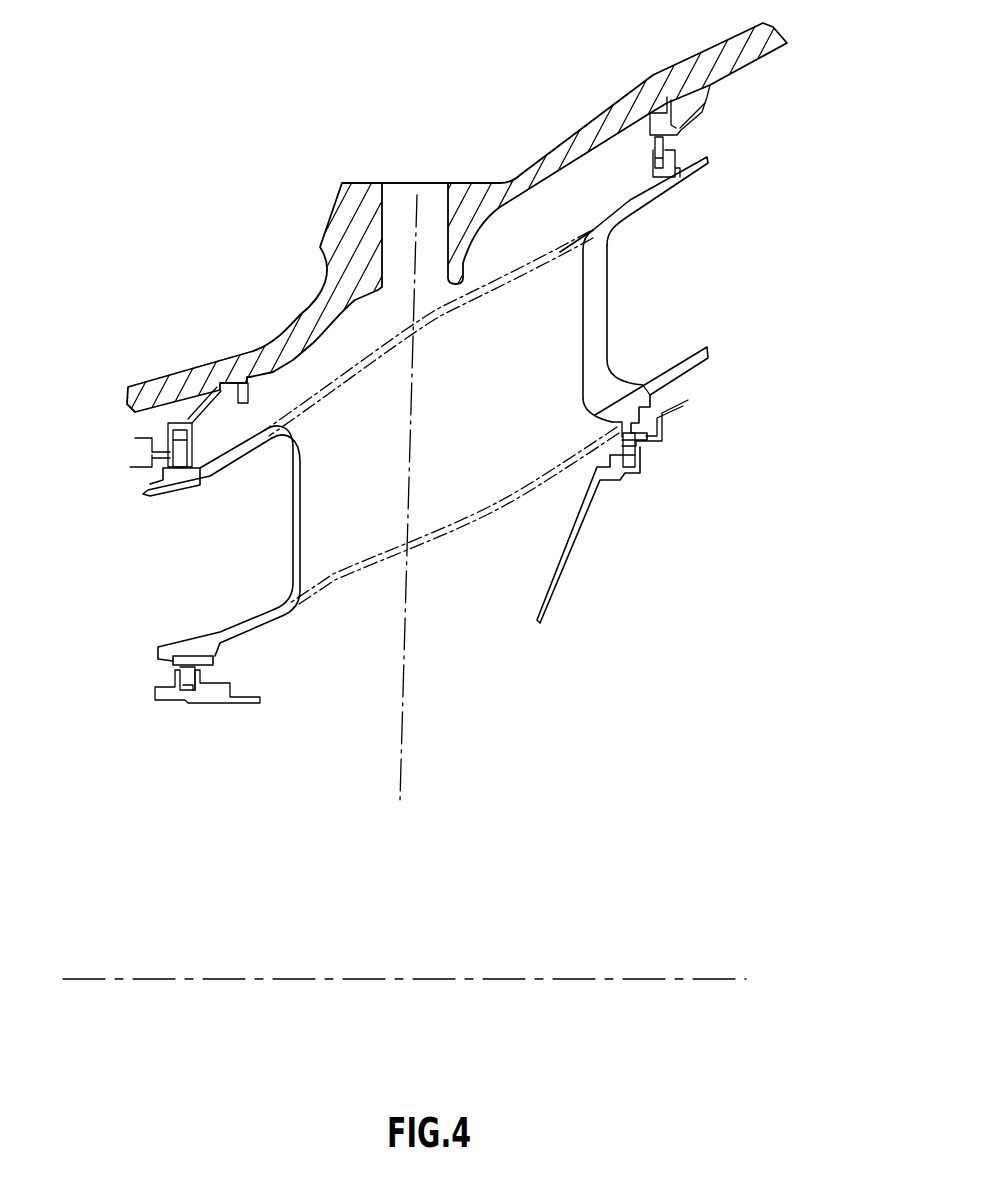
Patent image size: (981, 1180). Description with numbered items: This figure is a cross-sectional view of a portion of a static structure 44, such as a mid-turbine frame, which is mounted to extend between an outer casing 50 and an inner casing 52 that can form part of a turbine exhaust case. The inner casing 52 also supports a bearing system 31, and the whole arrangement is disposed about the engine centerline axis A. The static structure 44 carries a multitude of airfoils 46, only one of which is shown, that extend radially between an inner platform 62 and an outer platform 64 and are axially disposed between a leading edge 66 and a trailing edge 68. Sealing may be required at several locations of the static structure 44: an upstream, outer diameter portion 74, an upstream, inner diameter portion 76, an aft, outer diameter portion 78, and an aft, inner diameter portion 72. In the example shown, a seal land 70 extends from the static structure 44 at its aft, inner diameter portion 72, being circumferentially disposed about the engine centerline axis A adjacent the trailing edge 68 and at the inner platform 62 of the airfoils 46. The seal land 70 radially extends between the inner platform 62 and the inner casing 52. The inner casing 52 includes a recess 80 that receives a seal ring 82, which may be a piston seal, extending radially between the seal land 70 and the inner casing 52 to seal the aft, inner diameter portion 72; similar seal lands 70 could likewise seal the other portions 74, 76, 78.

The outer casing 50 is at (553, 147).
The aft, outer diameter portion 78 is at (722, 152).
The trailing edge 68 is at (808, 170).
The static structure 44 is at (733, 268).
The outer platform 64 is at (633, 200).
The airfoils 46 is at (491, 357).
The inner platform 62 is at (706, 356).
The upstream, outer diameter portion 74 is at (118, 511).
The leading edge 66 is at (39, 593).
The upstream, inner diameter portion 76 is at (143, 652).
The aft, inner diameter portion 72 is at (642, 385).
The seal land 70 is at (613, 432).
The seal ring 82 is at (635, 447).
The recess 80 is at (628, 468).
The inner casing 52 is at (571, 574).
The bearing system 31 is at (452, 909).
The engine centerline axis A is at (596, 978).